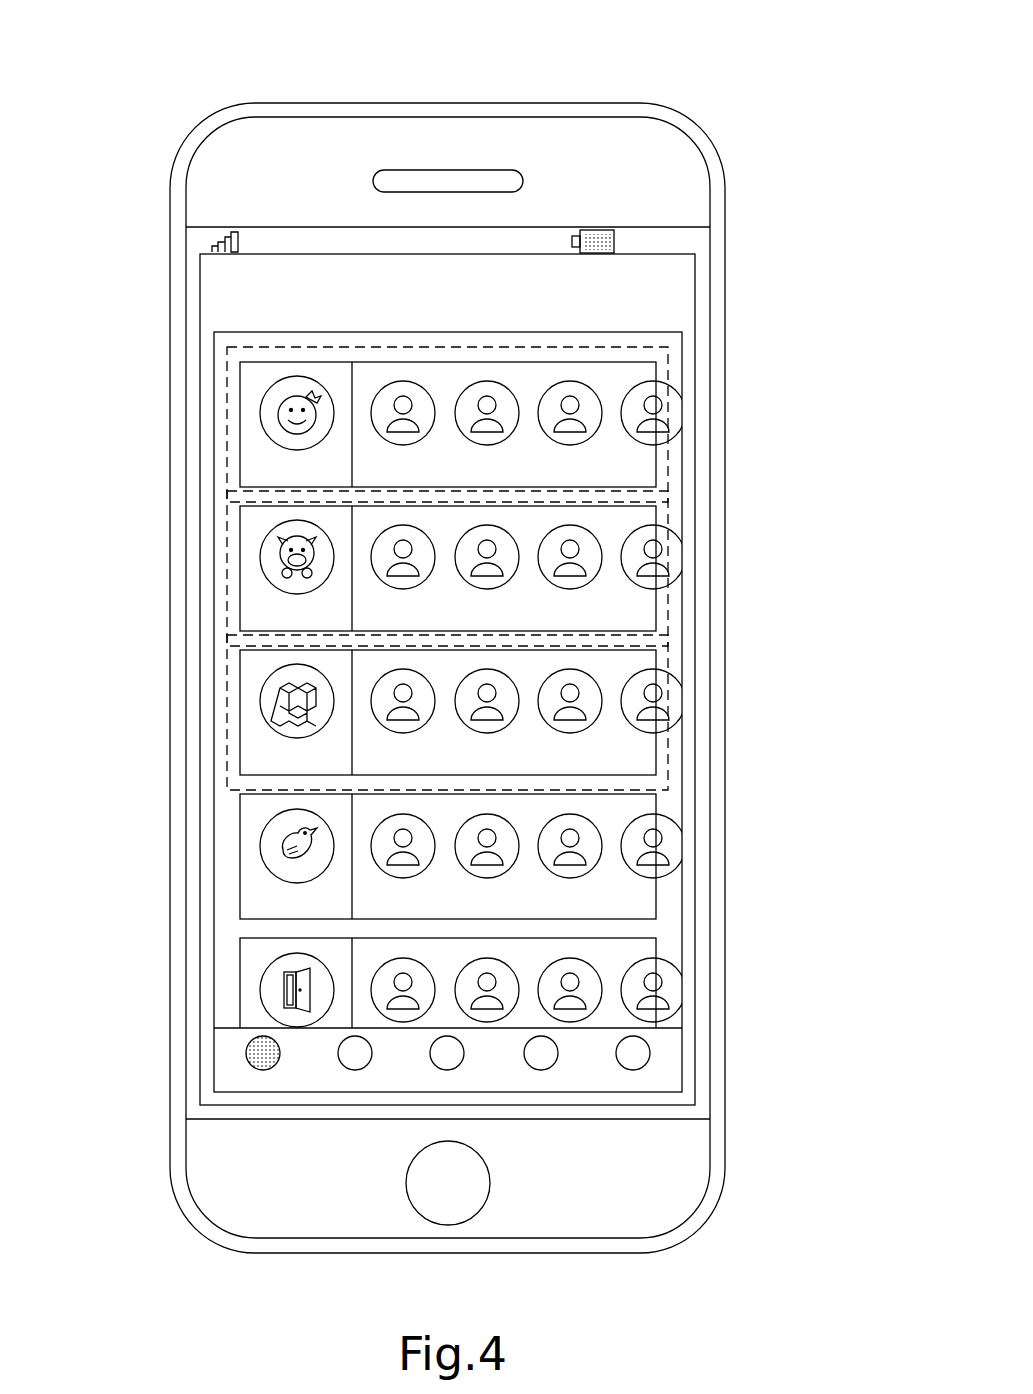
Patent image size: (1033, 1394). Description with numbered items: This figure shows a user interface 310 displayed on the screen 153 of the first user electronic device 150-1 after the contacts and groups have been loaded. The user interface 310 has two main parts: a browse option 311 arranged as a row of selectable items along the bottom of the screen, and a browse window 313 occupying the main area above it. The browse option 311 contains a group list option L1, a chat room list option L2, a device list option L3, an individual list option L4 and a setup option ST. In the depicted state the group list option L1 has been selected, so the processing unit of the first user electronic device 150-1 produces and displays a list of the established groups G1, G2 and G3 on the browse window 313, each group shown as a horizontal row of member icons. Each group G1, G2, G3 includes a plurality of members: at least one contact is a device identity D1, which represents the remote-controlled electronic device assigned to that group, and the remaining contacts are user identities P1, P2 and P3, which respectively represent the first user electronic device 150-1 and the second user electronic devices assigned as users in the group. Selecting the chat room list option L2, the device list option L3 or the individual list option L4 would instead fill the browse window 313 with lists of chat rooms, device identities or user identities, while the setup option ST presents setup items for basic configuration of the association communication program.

The first user electronic device 150-1 is at (158, 92).
The screen 153 is at (696, 243).
The user interface 310 is at (668, 310).
The browse option 311 is at (507, 1165).
The browse window 313 is at (663, 848).
The group G1 is at (447, 272).
The group G2 is at (668, 560).
The group G3 is at (668, 705).
The device identity D1 is at (260, 410).
The user identity P1 is at (430, 385).
The user identity P2 is at (486, 382).
The user identity P3 is at (568, 382).
The group list option L1 is at (260, 1070).
The chat room list option L2 is at (352, 1070).
The device list option L3 is at (444, 1070).
The individual list option L4 is at (538, 1070).
The setup option ST is at (630, 1070).